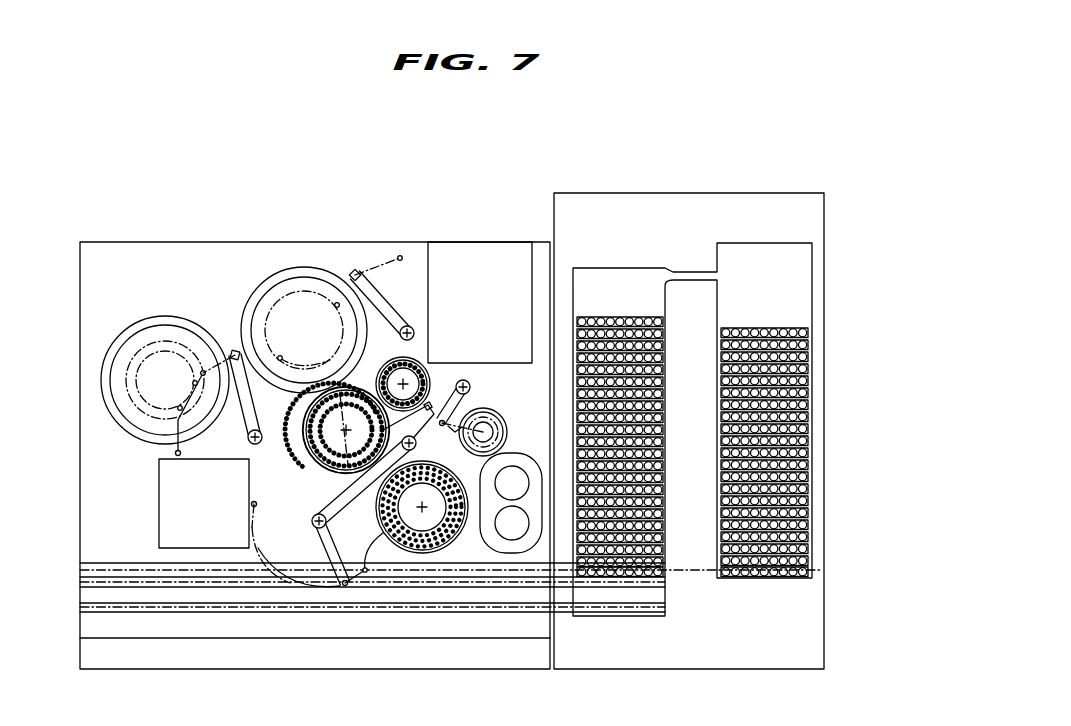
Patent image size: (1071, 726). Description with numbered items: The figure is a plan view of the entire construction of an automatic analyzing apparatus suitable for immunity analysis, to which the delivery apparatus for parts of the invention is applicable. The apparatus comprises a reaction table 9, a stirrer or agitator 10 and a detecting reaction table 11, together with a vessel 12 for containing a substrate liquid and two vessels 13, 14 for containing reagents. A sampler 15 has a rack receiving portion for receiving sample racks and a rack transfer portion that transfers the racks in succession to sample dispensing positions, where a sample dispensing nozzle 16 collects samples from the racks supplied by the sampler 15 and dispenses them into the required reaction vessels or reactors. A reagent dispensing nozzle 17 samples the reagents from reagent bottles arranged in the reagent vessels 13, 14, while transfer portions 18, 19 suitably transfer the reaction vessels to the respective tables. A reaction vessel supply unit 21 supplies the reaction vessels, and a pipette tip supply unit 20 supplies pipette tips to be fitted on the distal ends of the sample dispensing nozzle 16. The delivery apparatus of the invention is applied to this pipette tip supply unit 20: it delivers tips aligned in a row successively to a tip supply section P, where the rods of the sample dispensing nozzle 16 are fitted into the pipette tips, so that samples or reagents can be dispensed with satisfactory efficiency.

The reaction table 9 is at (425, 563).
The stirrer 10 is at (314, 472).
The detecting reaction table 11 is at (488, 392).
The vessel 12 is at (528, 563).
The reagent vessel 13 is at (114, 311).
The reagent vessel 14 is at (262, 276).
The sampler 15 is at (827, 345).
The sample dispensing nozzle 16 is at (330, 563).
The reagent dispensing nozzle 17 is at (403, 299).
The transfer portion 18 is at (333, 383).
The transfer portion 19 is at (486, 446).
The pipette tip supply unit 20 is at (149, 508).
The reaction vessel supply unit 21 is at (461, 260).
The tip supply section P is at (254, 504).